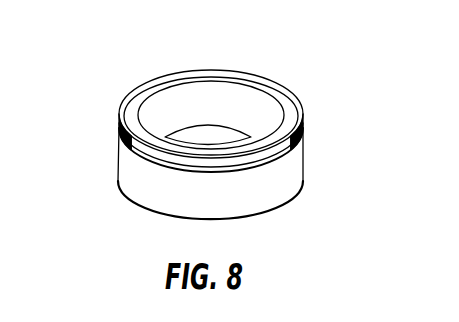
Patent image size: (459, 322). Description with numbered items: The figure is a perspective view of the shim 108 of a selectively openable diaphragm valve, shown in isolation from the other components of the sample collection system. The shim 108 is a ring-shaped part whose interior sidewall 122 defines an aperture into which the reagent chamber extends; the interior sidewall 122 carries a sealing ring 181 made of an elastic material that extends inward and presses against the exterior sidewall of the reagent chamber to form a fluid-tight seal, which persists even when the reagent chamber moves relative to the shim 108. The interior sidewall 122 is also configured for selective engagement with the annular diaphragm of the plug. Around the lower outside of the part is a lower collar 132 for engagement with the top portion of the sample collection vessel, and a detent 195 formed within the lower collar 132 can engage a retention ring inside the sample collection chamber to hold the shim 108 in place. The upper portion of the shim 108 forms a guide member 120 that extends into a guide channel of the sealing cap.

The shim 108 is at (94, 53).
The guide member 120 is at (302, 185).
The interior sidewall 122 is at (273, 113).
The lower collar 132 is at (118, 92).
The sealing ring 181 is at (205, 126).
The detent 195 is at (306, 143).